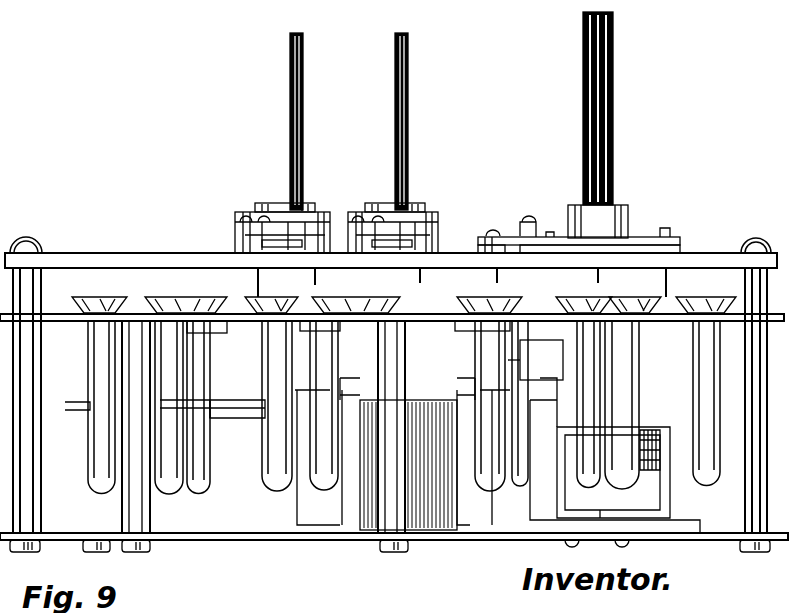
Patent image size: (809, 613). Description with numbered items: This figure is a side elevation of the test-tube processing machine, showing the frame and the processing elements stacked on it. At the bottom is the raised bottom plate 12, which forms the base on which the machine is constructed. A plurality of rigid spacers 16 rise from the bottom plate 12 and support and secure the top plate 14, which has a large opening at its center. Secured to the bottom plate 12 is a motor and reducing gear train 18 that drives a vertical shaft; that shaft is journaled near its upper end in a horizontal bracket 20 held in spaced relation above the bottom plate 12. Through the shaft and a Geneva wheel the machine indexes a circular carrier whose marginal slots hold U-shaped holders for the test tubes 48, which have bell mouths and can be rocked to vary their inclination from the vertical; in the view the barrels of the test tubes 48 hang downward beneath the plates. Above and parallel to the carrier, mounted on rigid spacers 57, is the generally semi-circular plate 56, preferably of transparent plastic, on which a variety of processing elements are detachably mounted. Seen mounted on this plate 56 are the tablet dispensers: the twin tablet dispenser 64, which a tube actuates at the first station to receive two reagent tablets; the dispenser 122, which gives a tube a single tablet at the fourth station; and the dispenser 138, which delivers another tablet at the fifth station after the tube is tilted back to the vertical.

The bottom plate 12 is at (272, 532).
The top plate 14 is at (68, 322).
The rigid spacers 16 is at (41, 378).
The motor and reducing gear train 18 is at (445, 395).
The horizontal bracket 20 is at (535, 360).
The test tubes 48 is at (205, 480).
The semi-circular plate 56 is at (172, 250).
The rigid spacers 57 is at (42, 283).
The twin tablet dispenser 64 is at (657, 224).
The dispenser 122 is at (463, 209).
The dispenser 138 is at (338, 204).